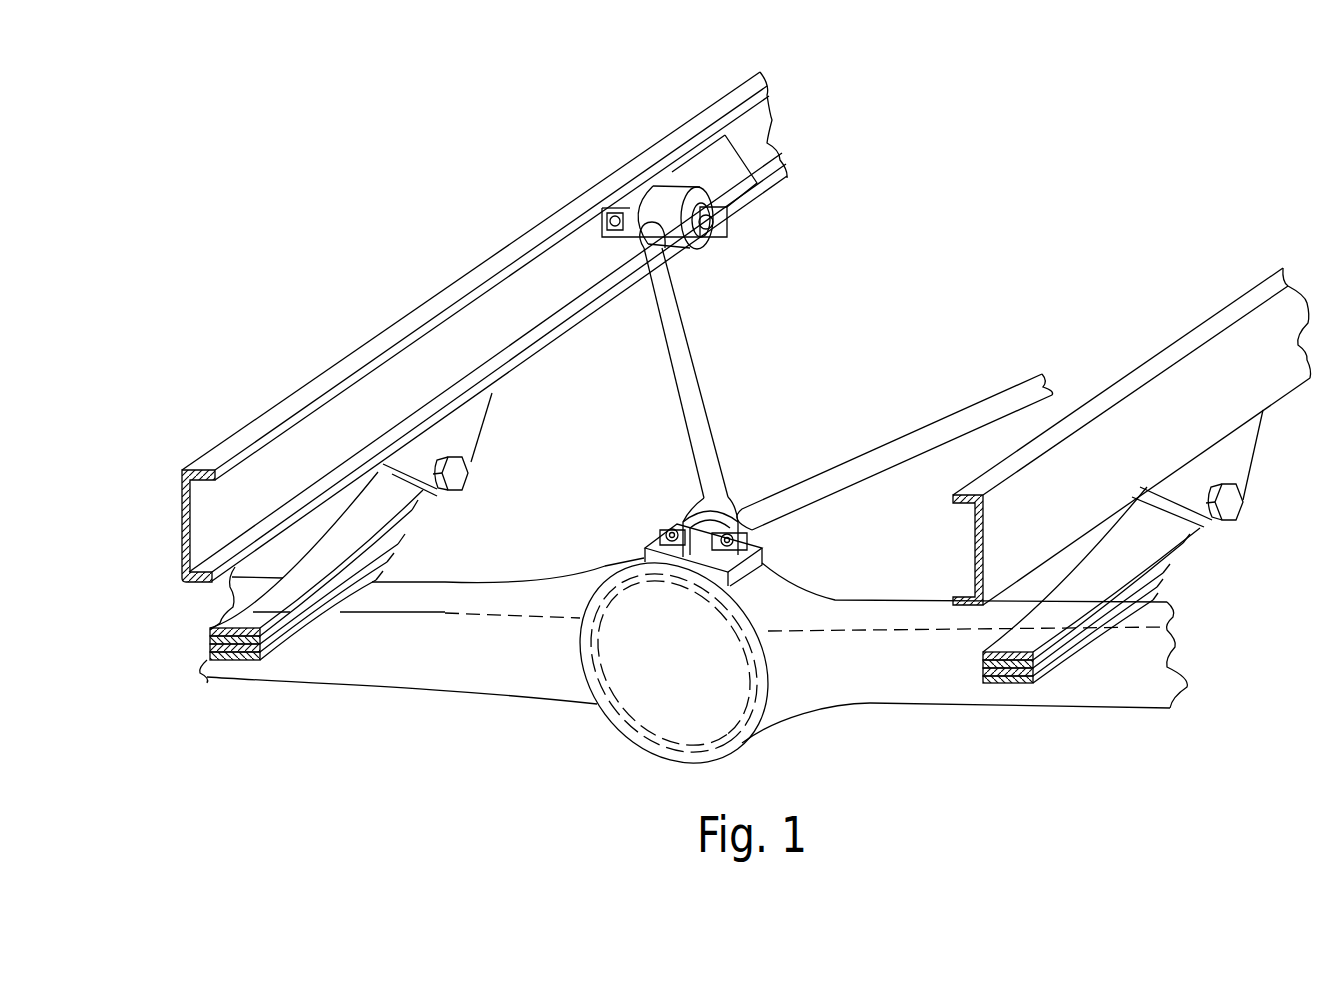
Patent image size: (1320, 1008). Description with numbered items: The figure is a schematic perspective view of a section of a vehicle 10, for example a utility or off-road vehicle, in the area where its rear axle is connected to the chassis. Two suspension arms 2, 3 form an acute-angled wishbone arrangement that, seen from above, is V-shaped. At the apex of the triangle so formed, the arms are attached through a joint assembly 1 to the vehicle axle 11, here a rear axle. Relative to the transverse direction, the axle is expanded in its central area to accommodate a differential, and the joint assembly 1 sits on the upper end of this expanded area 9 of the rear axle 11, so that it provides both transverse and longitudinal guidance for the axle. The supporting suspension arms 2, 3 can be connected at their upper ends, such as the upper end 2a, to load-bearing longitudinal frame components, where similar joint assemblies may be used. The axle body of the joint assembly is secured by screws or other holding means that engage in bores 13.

The vehicle 10 is at (1040, 153).
The joint assembly 1 is at (687, 504).
The suspension arm 2 is at (692, 342).
The upper end of suspension arm 2a is at (722, 252).
The suspension arm 3 is at (960, 410).
The expanded area of rear axle 9 is at (665, 707).
The vehicle axle 11 is at (912, 683).
The bores 13 is at (670, 527).